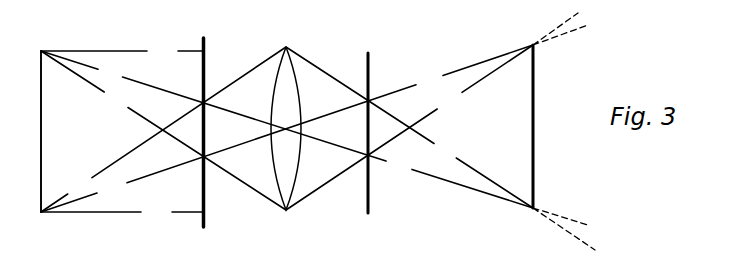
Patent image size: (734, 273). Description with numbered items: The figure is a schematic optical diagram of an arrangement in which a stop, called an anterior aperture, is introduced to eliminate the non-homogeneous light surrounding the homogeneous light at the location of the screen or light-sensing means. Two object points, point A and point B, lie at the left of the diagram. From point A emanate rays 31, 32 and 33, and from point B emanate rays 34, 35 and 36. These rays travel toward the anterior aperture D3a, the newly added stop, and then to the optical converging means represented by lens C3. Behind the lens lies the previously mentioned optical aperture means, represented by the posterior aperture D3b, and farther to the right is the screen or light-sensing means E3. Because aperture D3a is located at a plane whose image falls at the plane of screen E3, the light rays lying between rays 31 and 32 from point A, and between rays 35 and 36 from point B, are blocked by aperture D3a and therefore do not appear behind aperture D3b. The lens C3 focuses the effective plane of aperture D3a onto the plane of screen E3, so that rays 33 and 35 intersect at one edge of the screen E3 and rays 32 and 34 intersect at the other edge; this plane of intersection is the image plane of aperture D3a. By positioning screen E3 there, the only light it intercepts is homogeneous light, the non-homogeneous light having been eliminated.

The point A is at (27, 124).
The point B is at (28, 143).
The anterior aperture D3a is at (205, 73).
The posterior aperture D3b is at (368, 53).
The lens C3 is at (289, 47).
The screen E3 is at (534, 120).
The light ray 31 is at (122, 49).
The light ray 32 is at (287, 129).
The light ray 33 is at (287, 127).
The light ray 34 is at (287, 129).
The light ray 35 is at (287, 128).
The light ray 36 is at (122, 211).